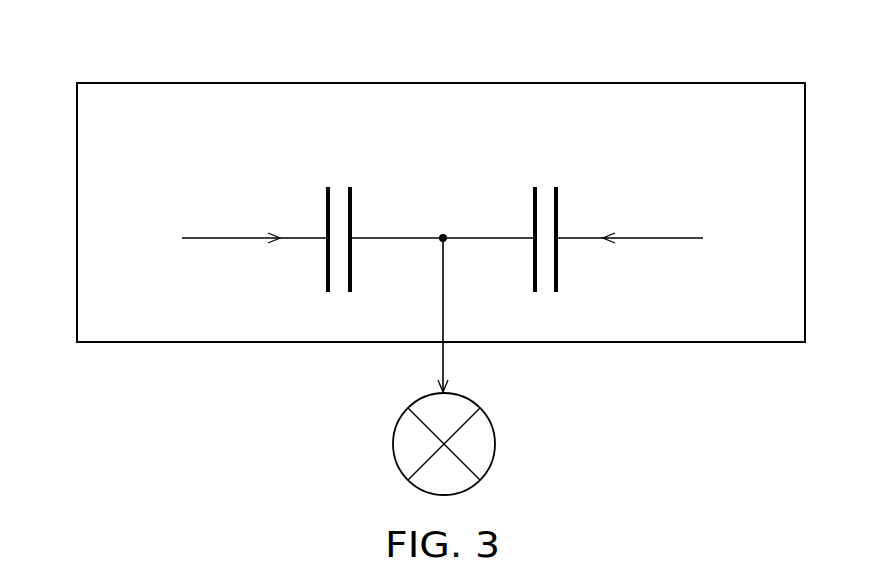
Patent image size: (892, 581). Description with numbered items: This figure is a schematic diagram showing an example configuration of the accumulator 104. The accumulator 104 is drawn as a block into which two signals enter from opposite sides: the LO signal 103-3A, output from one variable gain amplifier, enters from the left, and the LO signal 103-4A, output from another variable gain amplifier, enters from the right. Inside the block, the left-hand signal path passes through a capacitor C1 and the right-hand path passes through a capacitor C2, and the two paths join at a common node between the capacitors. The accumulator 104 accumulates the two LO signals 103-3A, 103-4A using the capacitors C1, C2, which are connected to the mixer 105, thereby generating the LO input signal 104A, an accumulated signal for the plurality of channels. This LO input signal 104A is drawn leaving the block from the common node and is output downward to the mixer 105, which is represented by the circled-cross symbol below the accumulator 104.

The accumulator 104 is at (337, 83).
The LO signal 103-3A is at (218, 238).
The LO signal 103-4A is at (665, 238).
The capacitor C1 is at (336, 220).
The capacitor C2 is at (545, 220).
The LO input signal 104A is at (440, 366).
The mixer 105 is at (495, 443).